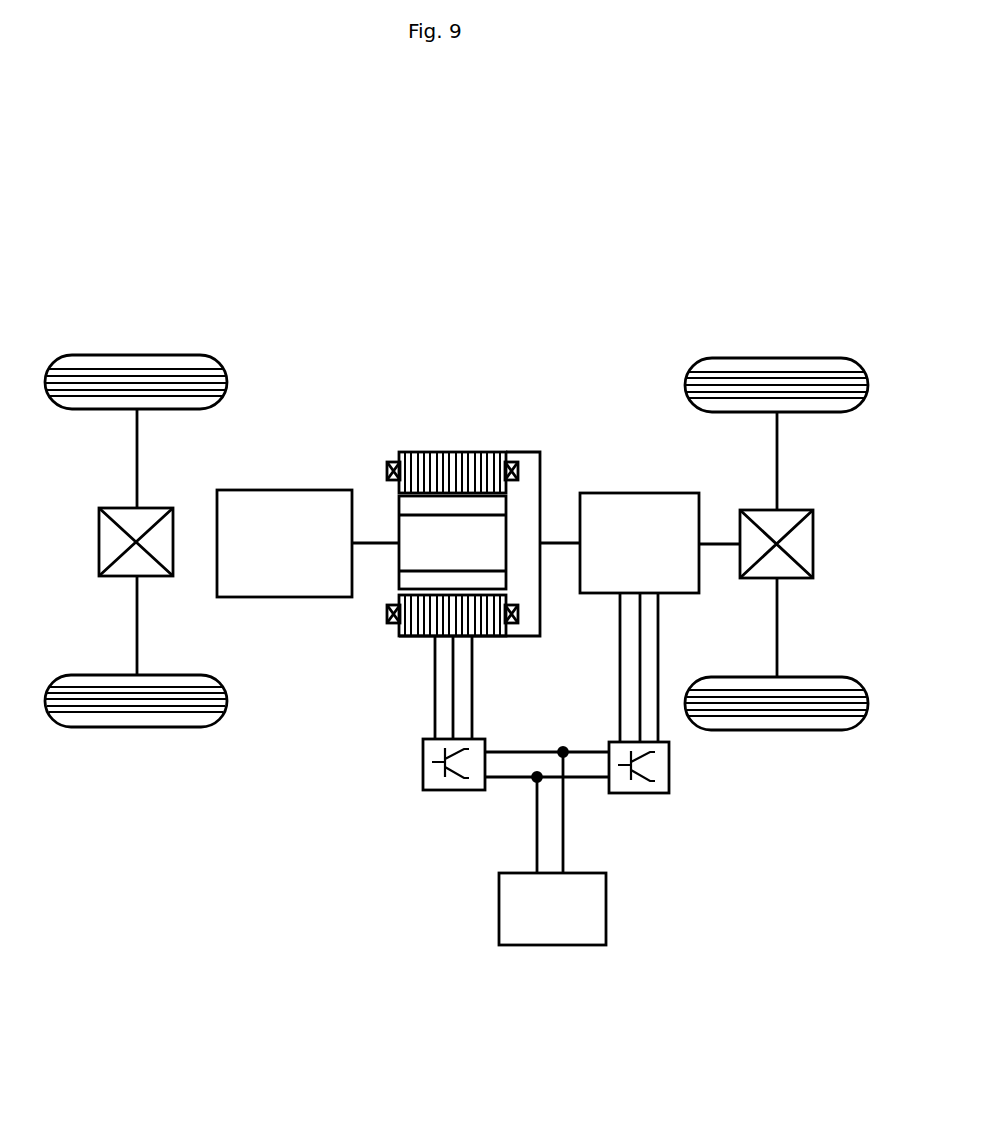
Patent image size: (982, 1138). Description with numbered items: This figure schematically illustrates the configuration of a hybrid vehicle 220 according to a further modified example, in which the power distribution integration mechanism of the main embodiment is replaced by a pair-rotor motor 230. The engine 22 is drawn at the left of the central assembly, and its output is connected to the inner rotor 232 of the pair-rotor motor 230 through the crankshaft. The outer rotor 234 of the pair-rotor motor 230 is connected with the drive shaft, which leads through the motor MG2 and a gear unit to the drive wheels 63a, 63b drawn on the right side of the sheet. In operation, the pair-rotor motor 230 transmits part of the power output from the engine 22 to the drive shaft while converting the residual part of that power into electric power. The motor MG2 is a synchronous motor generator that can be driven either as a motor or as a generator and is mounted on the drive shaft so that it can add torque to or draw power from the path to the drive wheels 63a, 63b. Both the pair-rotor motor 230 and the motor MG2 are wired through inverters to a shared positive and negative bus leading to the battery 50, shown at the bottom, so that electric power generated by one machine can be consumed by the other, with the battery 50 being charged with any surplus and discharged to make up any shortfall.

The hybrid vehicle 220 is at (532, 242).
The engine 22 is at (283, 597).
The pair-rotor motor 230 is at (458, 302).
The inner rotor 232 is at (398, 525).
The outer rotor 234 is at (453, 452).
The motor MG2 is at (640, 493).
The drive wheel 63a is at (777, 358).
The drive wheel 63b is at (777, 730).
The battery 50 is at (606, 903).